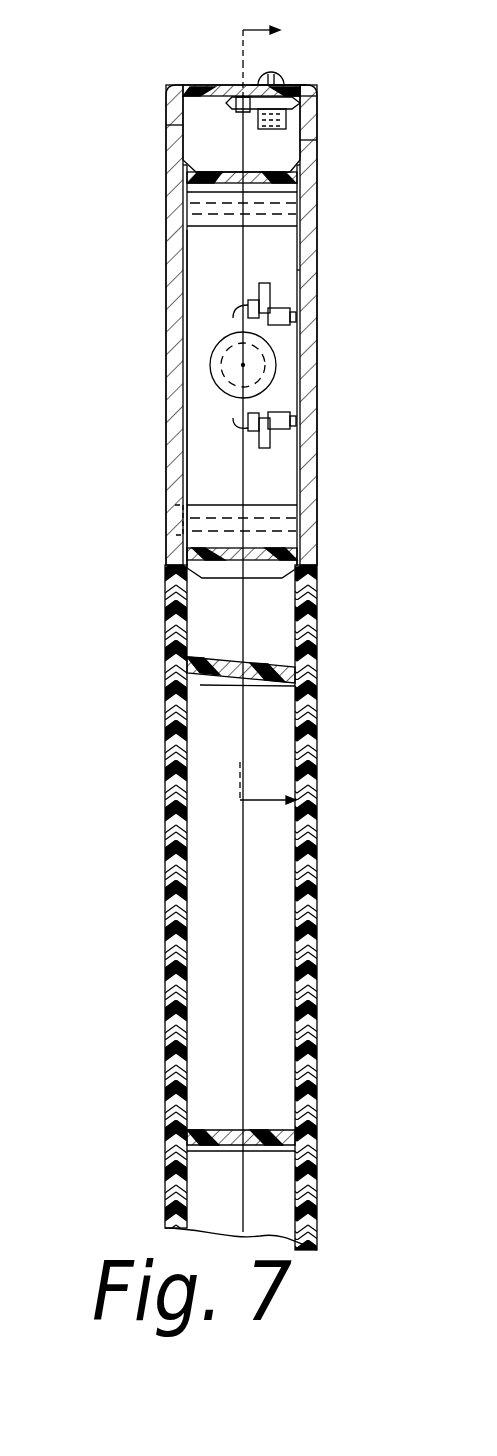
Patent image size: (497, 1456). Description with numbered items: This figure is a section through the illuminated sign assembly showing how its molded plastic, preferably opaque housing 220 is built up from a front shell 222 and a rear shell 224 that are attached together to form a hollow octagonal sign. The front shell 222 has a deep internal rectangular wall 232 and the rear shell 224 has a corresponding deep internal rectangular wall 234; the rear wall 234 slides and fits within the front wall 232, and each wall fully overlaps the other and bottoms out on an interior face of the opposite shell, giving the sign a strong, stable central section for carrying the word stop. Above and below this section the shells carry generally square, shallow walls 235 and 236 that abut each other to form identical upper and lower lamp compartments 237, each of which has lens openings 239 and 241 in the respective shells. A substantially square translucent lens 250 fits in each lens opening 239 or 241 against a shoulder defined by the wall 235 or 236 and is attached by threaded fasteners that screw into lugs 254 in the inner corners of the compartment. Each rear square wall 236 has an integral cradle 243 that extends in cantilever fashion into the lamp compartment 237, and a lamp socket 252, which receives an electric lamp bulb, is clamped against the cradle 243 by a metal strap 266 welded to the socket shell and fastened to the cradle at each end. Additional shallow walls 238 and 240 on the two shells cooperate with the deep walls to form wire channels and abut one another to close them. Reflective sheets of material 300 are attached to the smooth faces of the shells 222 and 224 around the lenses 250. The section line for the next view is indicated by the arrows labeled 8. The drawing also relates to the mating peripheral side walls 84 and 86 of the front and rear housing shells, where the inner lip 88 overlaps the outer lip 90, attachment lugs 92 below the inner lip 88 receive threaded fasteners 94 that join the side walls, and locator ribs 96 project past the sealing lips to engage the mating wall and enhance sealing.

The section line 8- 8 is at (280, 430).
The peripheral side wall 84 is at (200, 86).
The peripheral side wall 86 is at (300, 88).
The inner lip 88 is at (228, 103).
The outer lip 90 is at (243, 62).
The attachment lug 92 is at (286, 120).
The threaded fastener 94 is at (278, 76).
The locator rib 96 is at (238, 113).
The housing 220 is at (318, 96).
The front shell 222 is at (166, 125).
The rear shell 224 is at (318, 140).
The deep internal rectangular wall 232 is at (205, 664).
The deep internal rectangular wall 234 is at (235, 687).
The shallow square wall 235 is at (192, 184).
The shallow square wall 236 is at (300, 148).
The lamp compartment 237 is at (206, 266).
The shallow wall 238 is at (178, 520).
The lens opening 239 is at (187, 243).
The shallow wall 240 is at (300, 503).
The lens opening 241 is at (300, 288).
The cradle 243 is at (270, 445).
The translucent lens 250 is at (175, 320).
The lamp socket 252 is at (243, 365).
The lug 254 is at (252, 226).
The metal strap 266 is at (262, 445).
The reflective sheet of material 300 is at (170, 856).